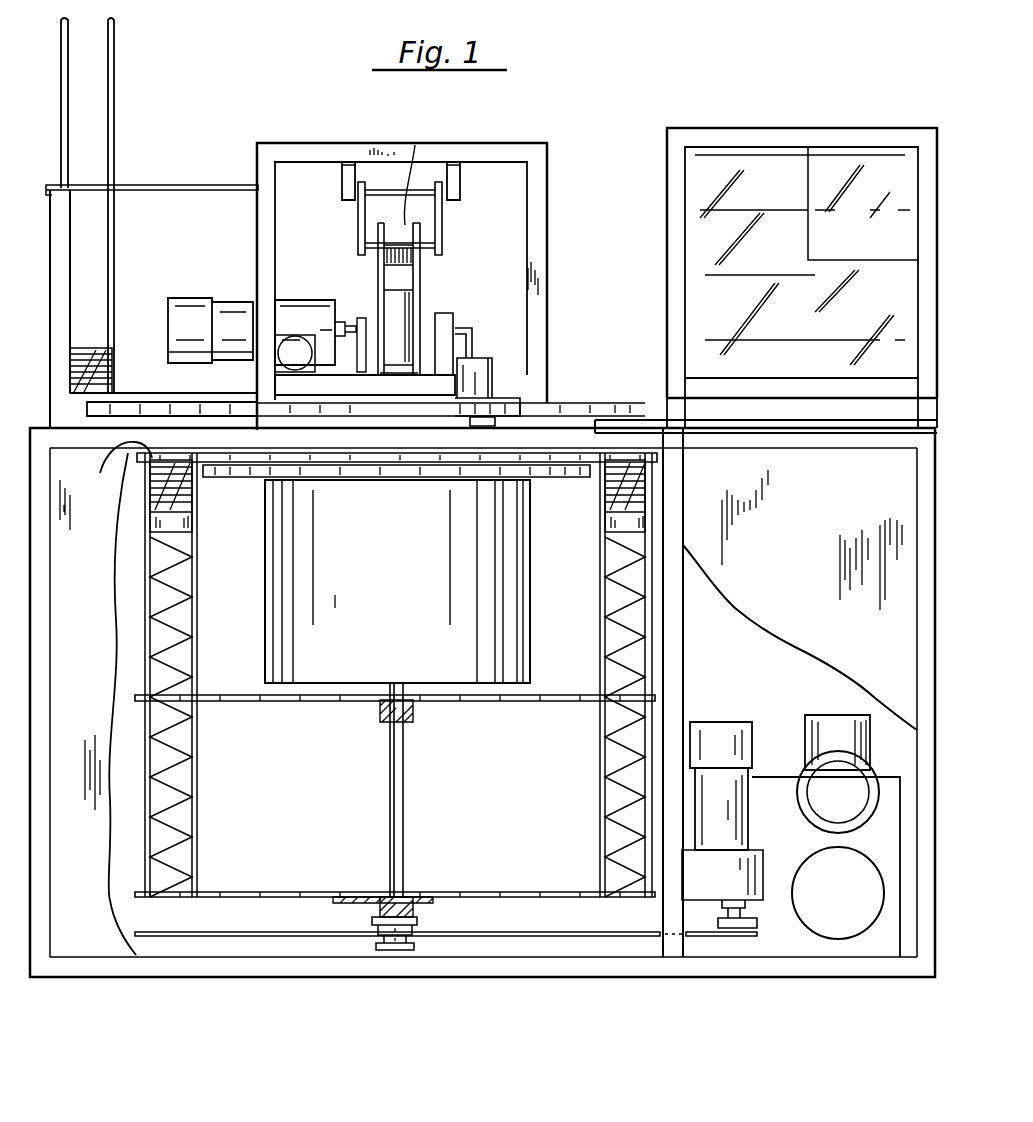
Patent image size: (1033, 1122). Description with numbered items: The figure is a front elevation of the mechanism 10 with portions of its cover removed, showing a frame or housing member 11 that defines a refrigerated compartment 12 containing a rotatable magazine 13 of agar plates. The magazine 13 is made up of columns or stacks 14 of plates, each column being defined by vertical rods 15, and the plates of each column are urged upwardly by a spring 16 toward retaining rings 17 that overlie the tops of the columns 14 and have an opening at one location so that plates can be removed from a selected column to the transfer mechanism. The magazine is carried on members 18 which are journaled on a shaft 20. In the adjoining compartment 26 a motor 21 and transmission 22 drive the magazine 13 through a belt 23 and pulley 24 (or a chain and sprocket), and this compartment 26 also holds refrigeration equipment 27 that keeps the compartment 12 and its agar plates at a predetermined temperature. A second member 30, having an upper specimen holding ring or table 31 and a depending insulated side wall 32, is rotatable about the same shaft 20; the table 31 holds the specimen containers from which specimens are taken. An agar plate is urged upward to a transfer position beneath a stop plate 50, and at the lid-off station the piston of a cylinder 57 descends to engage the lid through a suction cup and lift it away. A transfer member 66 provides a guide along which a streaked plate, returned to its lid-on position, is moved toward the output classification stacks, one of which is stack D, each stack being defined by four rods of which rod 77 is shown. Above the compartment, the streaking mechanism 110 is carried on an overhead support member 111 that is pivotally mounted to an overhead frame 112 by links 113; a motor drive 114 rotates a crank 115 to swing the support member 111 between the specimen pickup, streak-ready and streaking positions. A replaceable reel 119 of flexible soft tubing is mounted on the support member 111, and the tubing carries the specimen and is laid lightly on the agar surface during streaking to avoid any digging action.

The mechanism 10 is at (187, 96).
The frame or housing member 11 is at (58, 664).
The refrigerated compartment 12 is at (128, 852).
The rotatable magazine 13 is at (247, 890).
The columns or stacks 14 is at (206, 660).
The vertical rods 15 is at (190, 779).
The spring 16 is at (190, 622).
The retaining rings 17 is at (118, 464).
The members 18 is at (560, 470).
The shaft 20 is at (392, 808).
The motor 21 is at (725, 825).
The transmission 22 is at (690, 886).
The belt 23 is at (545, 927).
The pulley 24 is at (380, 920).
The compartment 26 is at (774, 688).
The refrigeration equipment 27 is at (843, 724).
The second member 30 is at (400, 581).
The specimen holding ring or table 31 is at (396, 477).
The insulated side wall 32 is at (268, 549).
The stop plate 50 is at (622, 426).
The cylinder 57 is at (446, 322).
The transfer member 66 is at (204, 411).
The rod 77 is at (126, 140).
The streaking mechanism 110 is at (409, 244).
The overhead support member 111 is at (441, 292).
The overhead frame 112 is at (456, 185).
The links 113 is at (358, 222).
The motor drive 114 is at (228, 308).
The crank 115 is at (356, 320).
The reel 119 is at (465, 237).
The stack D is at (120, 358).